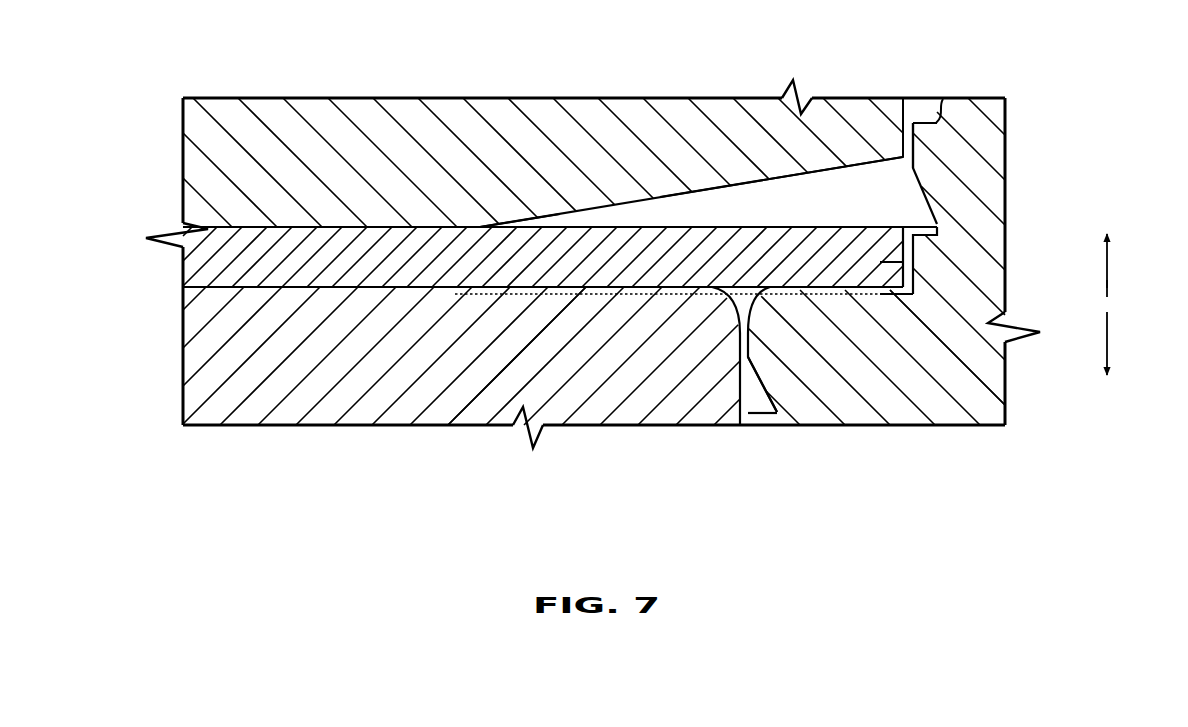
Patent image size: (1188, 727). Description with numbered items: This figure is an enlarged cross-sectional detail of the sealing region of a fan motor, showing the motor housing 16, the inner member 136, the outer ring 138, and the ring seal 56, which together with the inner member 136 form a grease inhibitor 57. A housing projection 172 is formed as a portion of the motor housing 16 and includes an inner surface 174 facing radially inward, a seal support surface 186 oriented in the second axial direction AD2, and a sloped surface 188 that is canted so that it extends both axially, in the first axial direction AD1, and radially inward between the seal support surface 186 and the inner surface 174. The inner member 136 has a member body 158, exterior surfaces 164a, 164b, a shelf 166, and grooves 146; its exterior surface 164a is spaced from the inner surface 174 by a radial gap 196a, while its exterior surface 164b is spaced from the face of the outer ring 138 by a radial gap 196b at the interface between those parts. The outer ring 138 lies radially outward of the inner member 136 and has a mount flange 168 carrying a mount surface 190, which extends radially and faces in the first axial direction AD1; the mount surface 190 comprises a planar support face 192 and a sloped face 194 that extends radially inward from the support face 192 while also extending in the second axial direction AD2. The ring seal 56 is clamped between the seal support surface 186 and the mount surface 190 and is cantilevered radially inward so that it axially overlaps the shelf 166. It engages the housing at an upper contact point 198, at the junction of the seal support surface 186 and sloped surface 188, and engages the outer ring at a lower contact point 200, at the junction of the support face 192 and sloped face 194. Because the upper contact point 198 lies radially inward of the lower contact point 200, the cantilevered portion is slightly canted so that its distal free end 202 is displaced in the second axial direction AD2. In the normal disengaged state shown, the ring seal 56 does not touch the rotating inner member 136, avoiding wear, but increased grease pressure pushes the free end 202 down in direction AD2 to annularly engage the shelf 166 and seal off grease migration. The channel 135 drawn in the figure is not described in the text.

The motor housing 16 is at (350, 66).
The ring seal 56 is at (200, 243).
The grease inhibitor 57 is at (900, 310).
The channel 135 is at (736, 392).
The inner member 136 is at (990, 264).
The outer ring 138 is at (596, 402).
The grooves 146 is at (948, 205).
The member body 158 is at (932, 402).
The exterior surface 164a is at (912, 170).
The exterior surface 164b is at (768, 407).
The shelf 166 is at (828, 285).
The mount flange 168 is at (452, 403).
The housing projection 172 is at (600, 108).
The inner surface 174 is at (916, 136).
The seal support surface 186 is at (283, 238).
The sloped surface 188 is at (718, 193).
The mount surface 190 is at (448, 275).
The support face 192 is at (330, 287).
The sloped face 194 is at (640, 283).
The radial gap 196a is at (943, 99).
The radial gap 196b is at (774, 408).
The upper contact point 198 is at (484, 220).
The lower contact point 200 is at (461, 292).
The distal free end 202 is at (886, 262).
The first axial direction AD1 is at (1108, 276).
The second axial direction AD2 is at (1108, 342).